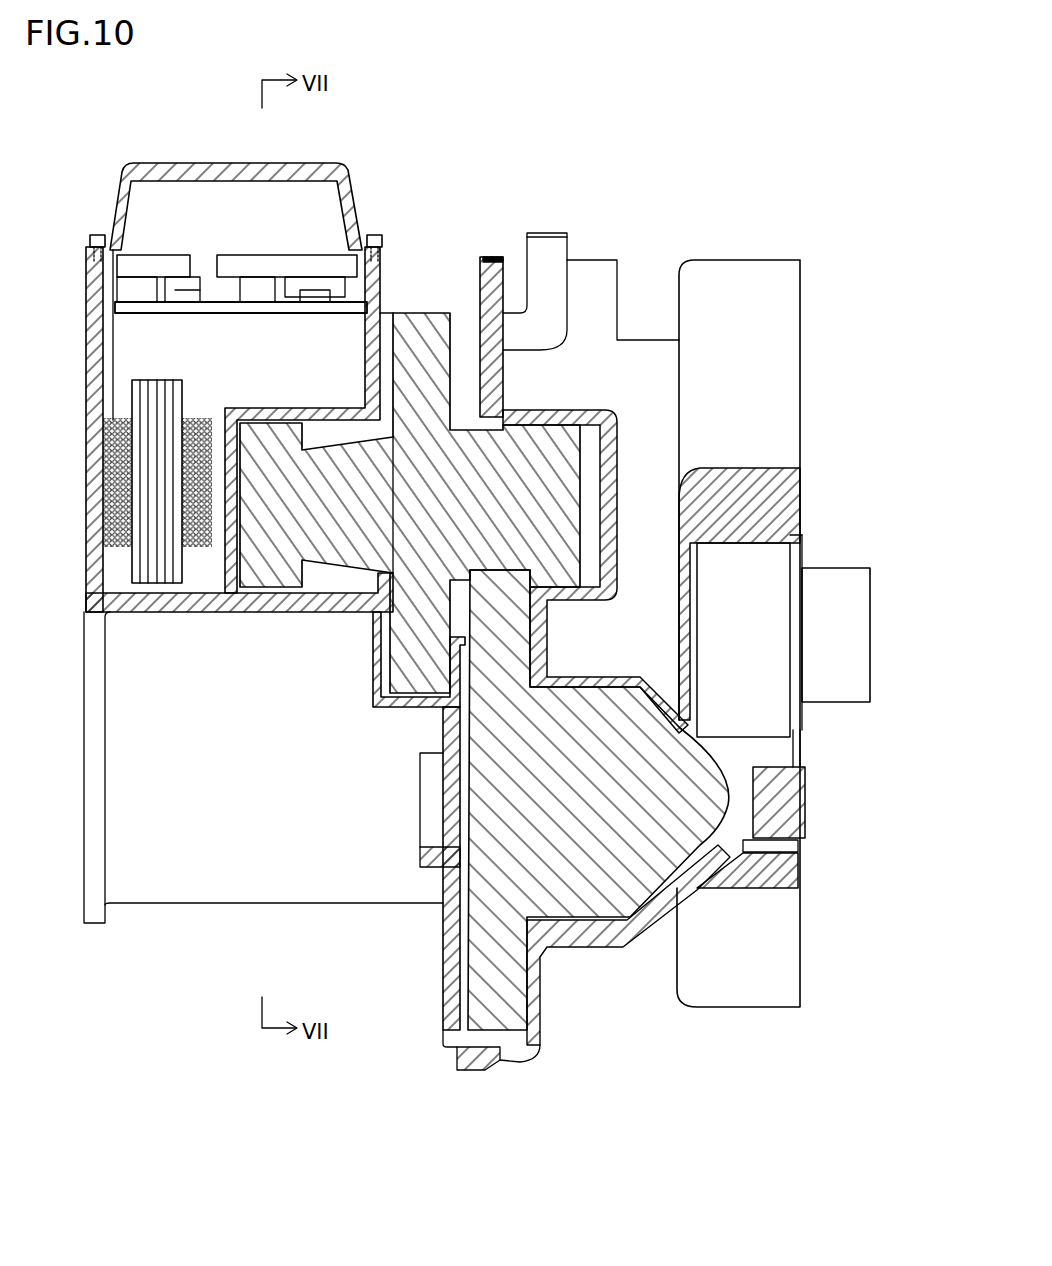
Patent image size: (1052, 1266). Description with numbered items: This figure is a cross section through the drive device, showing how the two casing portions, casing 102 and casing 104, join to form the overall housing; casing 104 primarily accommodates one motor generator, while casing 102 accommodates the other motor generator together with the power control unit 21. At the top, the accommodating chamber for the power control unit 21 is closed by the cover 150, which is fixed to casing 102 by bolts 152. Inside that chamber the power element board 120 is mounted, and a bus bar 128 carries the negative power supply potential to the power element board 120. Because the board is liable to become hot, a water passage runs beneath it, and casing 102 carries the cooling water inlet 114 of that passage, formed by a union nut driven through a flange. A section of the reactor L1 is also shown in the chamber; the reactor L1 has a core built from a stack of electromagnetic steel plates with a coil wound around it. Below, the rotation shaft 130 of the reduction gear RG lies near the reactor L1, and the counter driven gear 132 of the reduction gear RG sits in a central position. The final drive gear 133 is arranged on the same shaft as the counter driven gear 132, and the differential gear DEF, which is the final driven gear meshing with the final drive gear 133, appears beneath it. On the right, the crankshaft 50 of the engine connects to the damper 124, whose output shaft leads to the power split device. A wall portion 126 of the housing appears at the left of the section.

The power control unit 21 is at (203, 243).
The cover 150 is at (225, 167).
The bus bar 128 is at (327, 253).
The power element board 120 is at (327, 297).
The bolts 152 is at (90, 241).
The counter driven gear 132 is at (420, 318).
The reduction gear RG is at (472, 330).
The cooling water inlet 114 is at (548, 232).
The final drive gear 133 is at (508, 406).
The housing wall 126 is at (103, 331).
The reactor L1 is at (118, 420).
The rotation shaft 130 is at (273, 586).
The crankshaft 50 is at (870, 645).
The damper 124 is at (800, 750).
The differential gear DEF is at (522, 990).
The casing 102 is at (475, 1075).
The casing 104 is at (800, 1075).